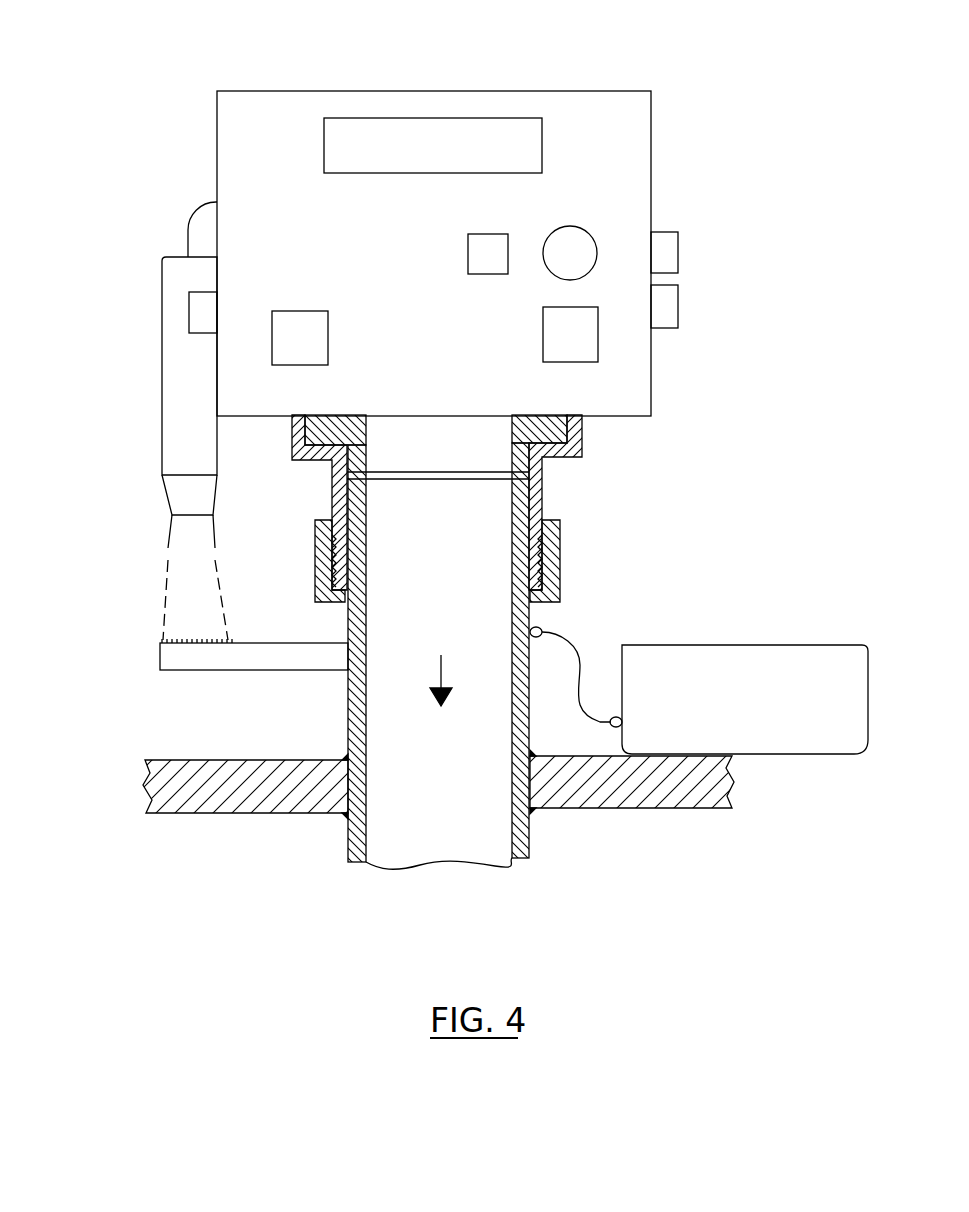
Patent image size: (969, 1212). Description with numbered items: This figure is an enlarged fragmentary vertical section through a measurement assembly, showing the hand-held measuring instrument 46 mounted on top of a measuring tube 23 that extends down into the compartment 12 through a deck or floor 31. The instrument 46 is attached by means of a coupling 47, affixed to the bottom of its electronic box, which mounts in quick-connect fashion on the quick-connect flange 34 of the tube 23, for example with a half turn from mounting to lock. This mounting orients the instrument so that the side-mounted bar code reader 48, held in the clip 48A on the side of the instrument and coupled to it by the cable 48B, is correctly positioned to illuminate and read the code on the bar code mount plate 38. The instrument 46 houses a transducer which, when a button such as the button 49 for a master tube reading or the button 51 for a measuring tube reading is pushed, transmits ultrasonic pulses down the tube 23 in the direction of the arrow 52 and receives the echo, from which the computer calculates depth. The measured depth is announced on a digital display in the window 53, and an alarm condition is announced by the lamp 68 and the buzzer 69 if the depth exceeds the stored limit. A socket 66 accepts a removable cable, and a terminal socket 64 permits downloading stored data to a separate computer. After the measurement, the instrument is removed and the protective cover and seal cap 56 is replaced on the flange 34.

The measuring instrument 46 is at (323, 78).
The window 53 is at (398, 130).
The buzzer 69 is at (488, 248).
The lamp 68 is at (573, 247).
The socket 66 is at (665, 251).
The terminal socket 64 is at (665, 308).
The button 49 is at (313, 338).
The button 51 is at (576, 340).
The bar code reader 48 is at (183, 420).
The cable 48B is at (193, 208).
The clip 48A is at (198, 315).
The bar code mount plate 38 is at (160, 658).
The measuring tube 23 is at (525, 838).
The coupling 47 is at (552, 521).
The quick-connect flange 34 is at (528, 560).
The arrow 52 is at (441, 655).
The protective cover and seal cap 56 is at (685, 677).
The floor 31 is at (680, 785).
The compartment 12 is at (305, 859).